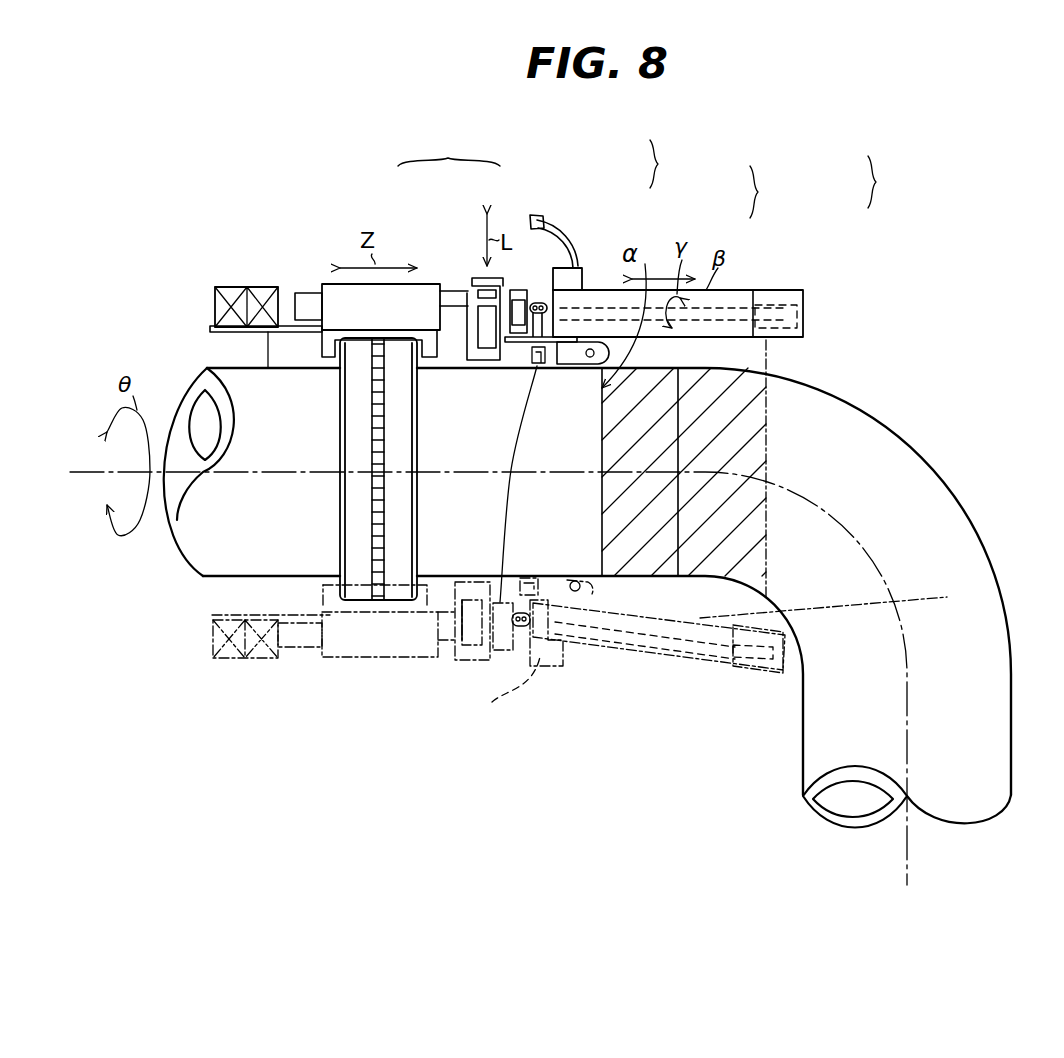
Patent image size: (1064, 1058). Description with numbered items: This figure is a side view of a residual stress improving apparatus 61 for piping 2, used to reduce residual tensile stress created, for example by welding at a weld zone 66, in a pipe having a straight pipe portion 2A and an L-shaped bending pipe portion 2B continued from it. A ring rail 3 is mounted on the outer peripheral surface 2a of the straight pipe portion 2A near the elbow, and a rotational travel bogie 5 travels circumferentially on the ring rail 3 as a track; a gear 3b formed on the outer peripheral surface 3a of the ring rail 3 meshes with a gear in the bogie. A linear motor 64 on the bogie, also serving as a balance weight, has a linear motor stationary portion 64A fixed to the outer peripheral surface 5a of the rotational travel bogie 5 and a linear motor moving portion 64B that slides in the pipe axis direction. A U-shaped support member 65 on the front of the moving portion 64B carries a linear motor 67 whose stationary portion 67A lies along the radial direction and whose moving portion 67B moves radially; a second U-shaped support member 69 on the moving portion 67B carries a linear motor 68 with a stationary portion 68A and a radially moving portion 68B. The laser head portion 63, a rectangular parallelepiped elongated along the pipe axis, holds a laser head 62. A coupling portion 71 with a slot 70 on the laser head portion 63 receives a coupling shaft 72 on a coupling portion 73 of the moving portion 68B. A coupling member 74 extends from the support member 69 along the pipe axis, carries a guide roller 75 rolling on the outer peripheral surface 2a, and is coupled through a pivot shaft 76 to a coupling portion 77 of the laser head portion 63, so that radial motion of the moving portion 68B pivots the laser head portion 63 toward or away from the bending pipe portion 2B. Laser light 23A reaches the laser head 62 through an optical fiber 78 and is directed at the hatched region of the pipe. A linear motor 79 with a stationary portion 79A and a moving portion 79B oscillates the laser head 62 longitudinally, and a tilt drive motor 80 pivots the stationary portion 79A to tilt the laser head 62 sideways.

The piping 2 is at (222, 366).
The straight pipe portion 2A is at (246, 366).
The bending pipe portion 2B is at (922, 455).
The outer peripheral surface 2a is at (258, 287).
The ring rail 3 is at (336, 514).
The outer peripheral surface of ring rail 3a is at (357, 587).
The gear 3b is at (362, 530).
The rotational travel bogie 5 is at (288, 326).
The outer peripheral surface of rotational travel bogie 5a is at (318, 342).
The laser light 23A is at (772, 357).
The residual stress improving apparatus 61 is at (838, 276).
The laser head 62 is at (806, 330).
The laser head portion 63 is at (803, 294).
The linear motor 64 is at (449, 145).
The linear motor stationary portion 64A is at (432, 284).
The linear motor moving portion 64B is at (458, 291).
The support member 65 is at (505, 282).
The weld zone 66 is at (680, 527).
The linear motor 67 is at (668, 164).
The stationary portion 67A is at (516, 290).
The moving portion 67B is at (538, 302).
The linear motor 68 is at (769, 192).
The stationary portion 68A is at (572, 268).
The moving portion 68B is at (593, 268).
The support member 69 is at (548, 300).
The slot 70 is at (525, 366).
The coupling portion 71 is at (557, 366).
The coupling shaft 72 is at (508, 366).
The coupling portion 73 is at (415, 548).
The coupling member 74 is at (570, 366).
The guide roller 75 is at (548, 366).
The pivot shaft 76 is at (585, 366).
The coupling portion 77 is at (617, 366).
The optical fiber 78 is at (546, 221).
The linear motor 79 is at (887, 182).
The stationary portion 79A is at (738, 303).
The moving portion 79B is at (774, 303).
The tilt drive motor 80 is at (583, 307).